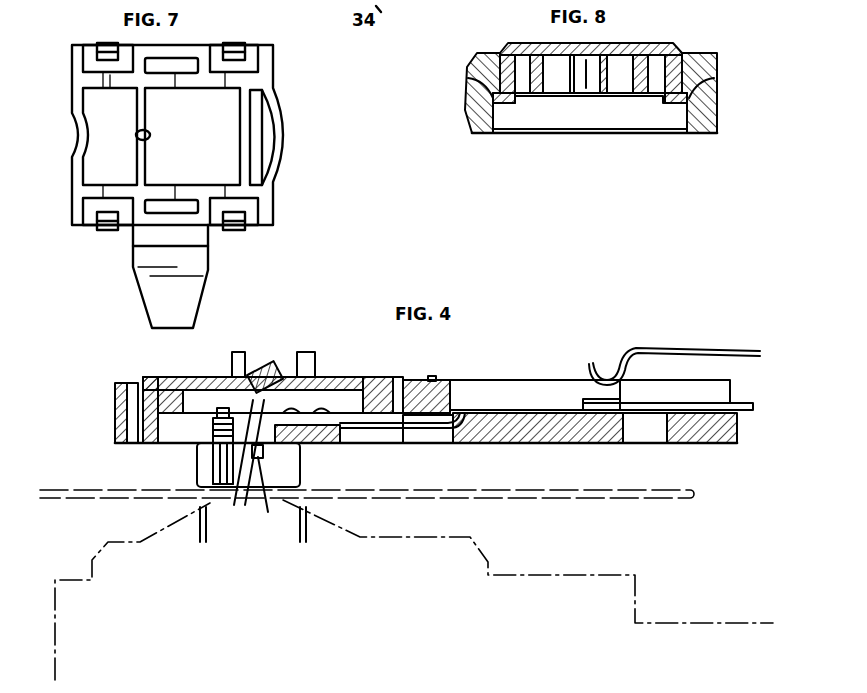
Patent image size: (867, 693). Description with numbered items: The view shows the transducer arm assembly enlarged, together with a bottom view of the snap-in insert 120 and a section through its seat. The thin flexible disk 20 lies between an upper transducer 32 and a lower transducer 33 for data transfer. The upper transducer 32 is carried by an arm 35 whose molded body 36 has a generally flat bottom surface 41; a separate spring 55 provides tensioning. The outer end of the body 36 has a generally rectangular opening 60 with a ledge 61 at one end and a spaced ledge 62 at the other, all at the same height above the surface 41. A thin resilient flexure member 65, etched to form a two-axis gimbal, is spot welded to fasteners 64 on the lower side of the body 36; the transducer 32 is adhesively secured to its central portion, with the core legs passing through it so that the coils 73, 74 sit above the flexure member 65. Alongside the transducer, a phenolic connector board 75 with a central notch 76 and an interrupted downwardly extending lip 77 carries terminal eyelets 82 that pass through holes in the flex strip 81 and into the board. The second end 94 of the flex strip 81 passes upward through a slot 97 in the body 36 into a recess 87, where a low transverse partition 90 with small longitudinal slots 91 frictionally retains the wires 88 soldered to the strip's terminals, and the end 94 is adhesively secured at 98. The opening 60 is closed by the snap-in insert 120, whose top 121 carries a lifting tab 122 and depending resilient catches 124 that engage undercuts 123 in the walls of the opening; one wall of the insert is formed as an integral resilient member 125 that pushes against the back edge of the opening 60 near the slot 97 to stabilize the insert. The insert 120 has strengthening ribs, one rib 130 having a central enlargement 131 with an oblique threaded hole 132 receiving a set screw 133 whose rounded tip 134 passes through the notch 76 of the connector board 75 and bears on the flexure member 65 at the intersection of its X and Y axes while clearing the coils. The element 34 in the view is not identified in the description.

In FIG. 4, the disk 20 is at (113, 500).
In FIG. 4, the upper transducer 32 is at (195, 468).
In FIG. 4, the lower transducer 33 is at (245, 533).
In FIG. 4, the frame 34 is at (640, 595).
In FIG. 4, the arm 35 is at (494, 378).
In FIG. 4, the body portion 36 is at (683, 443).
In FIG. 4, the bottom surface 41 is at (727, 442).
In FIG. 4, the spring 55 is at (693, 348).
In FIG. 4, the rectangular opening 60 is at (145, 380).
In FIG. 4, the ledge 61 is at (160, 397).
In FIG. 4, the ledge 62 is at (363, 380).
In FIG. 4, the fasteners 64 is at (118, 415).
In FIG. 4, the flexure member 65 is at (114, 447).
In FIG. 4, the coil 73 is at (211, 378).
In FIG. 4, the coil 74 is at (213, 430).
In FIG. 4, the connector board 75 is at (337, 445).
In FIG. 4, the central notch 76 is at (267, 437).
In FIG. 4, the downwardly extending lip 77 is at (260, 494).
In FIG. 4, the flex strip 81 is at (503, 412).
In FIG. 4, the eyelets 82 is at (320, 407).
In FIG. 4, the recess 87 is at (687, 388).
In FIG. 4, the wires 88 is at (737, 405).
In FIG. 4, the transverse partition 90 is at (597, 440).
In FIG. 4, the longitudinal slots 91 is at (600, 400).
In FIG. 4, the second end 94 is at (580, 430).
In FIG. 4, the slot 97 is at (460, 412).
In FIG. 4, the adhesive securing location 98 is at (517, 438).
In FIG. 7, the snap-in insert 120 is at (275, 70).
In FIG. 8, the snap-in insert 120 is at (675, 42).
In FIG. 4, the snap-in insert 120 is at (215, 374).
In FIG. 7, the top 121 is at (217, 118).
In FIG. 8, the top 121 is at (638, 43).
In FIG. 4, the top 121 is at (338, 370).
In FIG. 7, the lifting tab 122 is at (203, 275).
In FIG. 4, the lifting tab 122 is at (257, 367).
In FIG. 8, the undercuts 123 is at (487, 83).
In FIG. 7, the resilient catches 124 is at (103, 43).
In FIG. 8, the resilient catches 124 is at (510, 103).
In FIG. 4, the resilient member 125 is at (400, 444).
In FIG. 7, the rib 130 is at (140, 111).
In FIG. 7, the central enlargement 131 is at (150, 135).
In FIG. 4, the central enlargement 131 is at (300, 367).
In FIG. 7, the threaded hole 132 is at (150, 142).
In FIG. 4, the threaded hole 132 is at (288, 367).
In FIG. 7, the set screw 133 is at (134, 140).
In FIG. 4, the set screw 133 is at (262, 370).
In FIG. 7, the spherical tip 134 is at (137, 135).
In FIG. 4, the spherical tip 134 is at (253, 524).